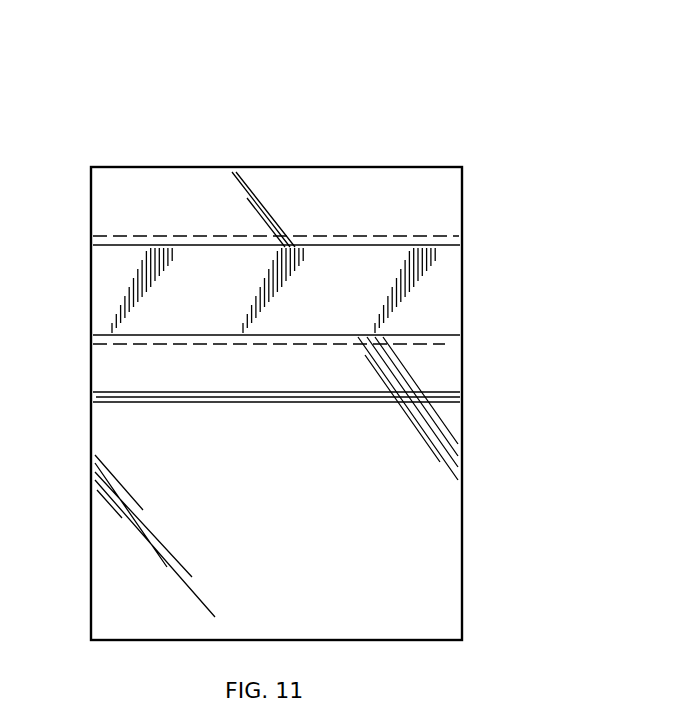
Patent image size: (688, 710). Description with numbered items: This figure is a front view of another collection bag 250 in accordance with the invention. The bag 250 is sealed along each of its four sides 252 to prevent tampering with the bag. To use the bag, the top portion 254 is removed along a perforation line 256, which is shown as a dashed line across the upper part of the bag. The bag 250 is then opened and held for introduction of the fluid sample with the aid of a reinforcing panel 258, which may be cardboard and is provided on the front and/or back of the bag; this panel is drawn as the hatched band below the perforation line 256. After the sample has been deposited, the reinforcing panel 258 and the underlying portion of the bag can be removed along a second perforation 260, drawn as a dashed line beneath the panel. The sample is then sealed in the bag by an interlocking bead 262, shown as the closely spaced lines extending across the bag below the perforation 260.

The collection bag 250 is at (410, 165).
The sides 252 is at (463, 458).
The top portion 254 is at (463, 205).
The perforation line 256 is at (450, 238).
The reinforcing panel 258 is at (463, 292).
The perforation 260 is at (445, 345).
The interlocking bead 262 is at (270, 401).